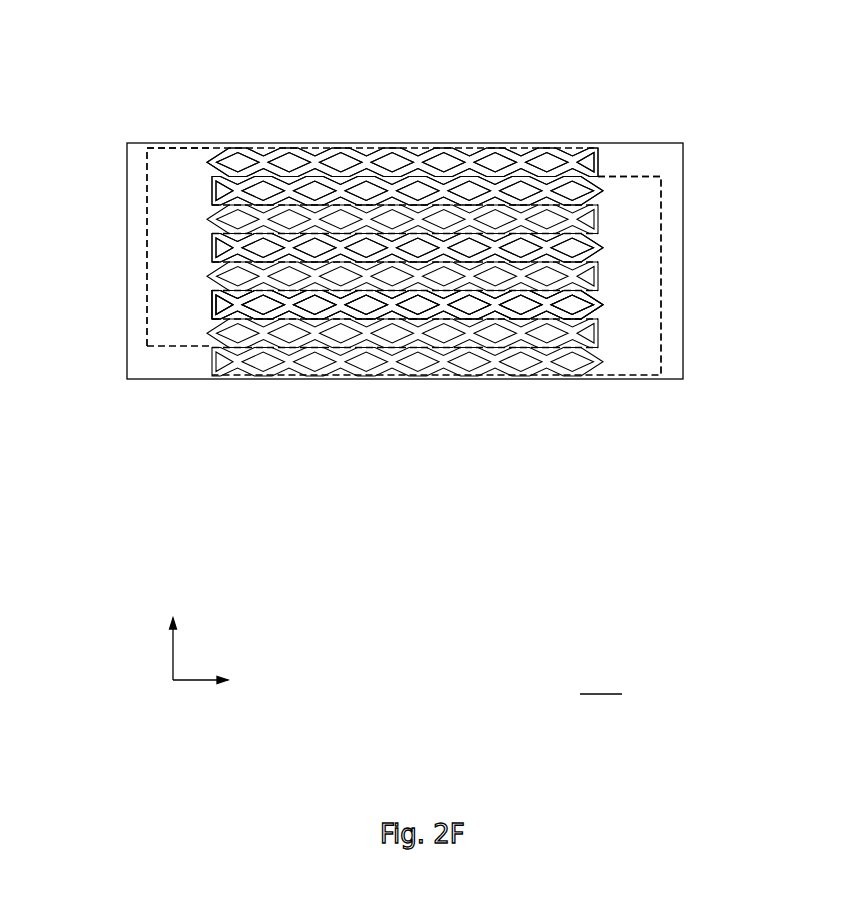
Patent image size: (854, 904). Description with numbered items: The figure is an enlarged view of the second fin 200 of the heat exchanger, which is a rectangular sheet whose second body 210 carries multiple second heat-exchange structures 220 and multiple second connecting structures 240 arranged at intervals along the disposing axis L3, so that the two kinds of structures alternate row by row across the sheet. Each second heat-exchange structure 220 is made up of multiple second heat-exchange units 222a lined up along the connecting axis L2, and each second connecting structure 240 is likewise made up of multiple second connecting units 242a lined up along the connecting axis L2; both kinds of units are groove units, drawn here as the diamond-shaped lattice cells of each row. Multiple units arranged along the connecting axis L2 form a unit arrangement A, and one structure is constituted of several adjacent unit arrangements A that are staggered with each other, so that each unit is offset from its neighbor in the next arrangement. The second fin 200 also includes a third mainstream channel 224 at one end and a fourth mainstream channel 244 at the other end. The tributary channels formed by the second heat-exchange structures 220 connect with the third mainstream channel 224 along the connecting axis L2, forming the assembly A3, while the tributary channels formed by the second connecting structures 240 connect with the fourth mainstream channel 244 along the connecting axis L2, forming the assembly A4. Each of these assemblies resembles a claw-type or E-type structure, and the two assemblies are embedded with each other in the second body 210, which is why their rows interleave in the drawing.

The second fin 200 is at (601, 681).
The second body 210 is at (673, 371).
The second heat-exchange structure 220 is at (520, 275).
The second heat-exchange unit 222a is at (538, 157).
The third mainstream channel 224 is at (167, 170).
The second connecting structure 240 is at (290, 193).
The second connecting unit 242a is at (263, 315).
The fourth mainstream channel 244 is at (612, 190).
The unit arrangement A is at (358, 144).
The assembly of the second heat-exchange structures and the third mainstream channel A3 is at (198, 147).
The assembly of the second connecting structures and the fourth mainstream channel A4 is at (640, 178).
The connecting axis L2 is at (216, 681).
The disposing axis L3 is at (172, 636).